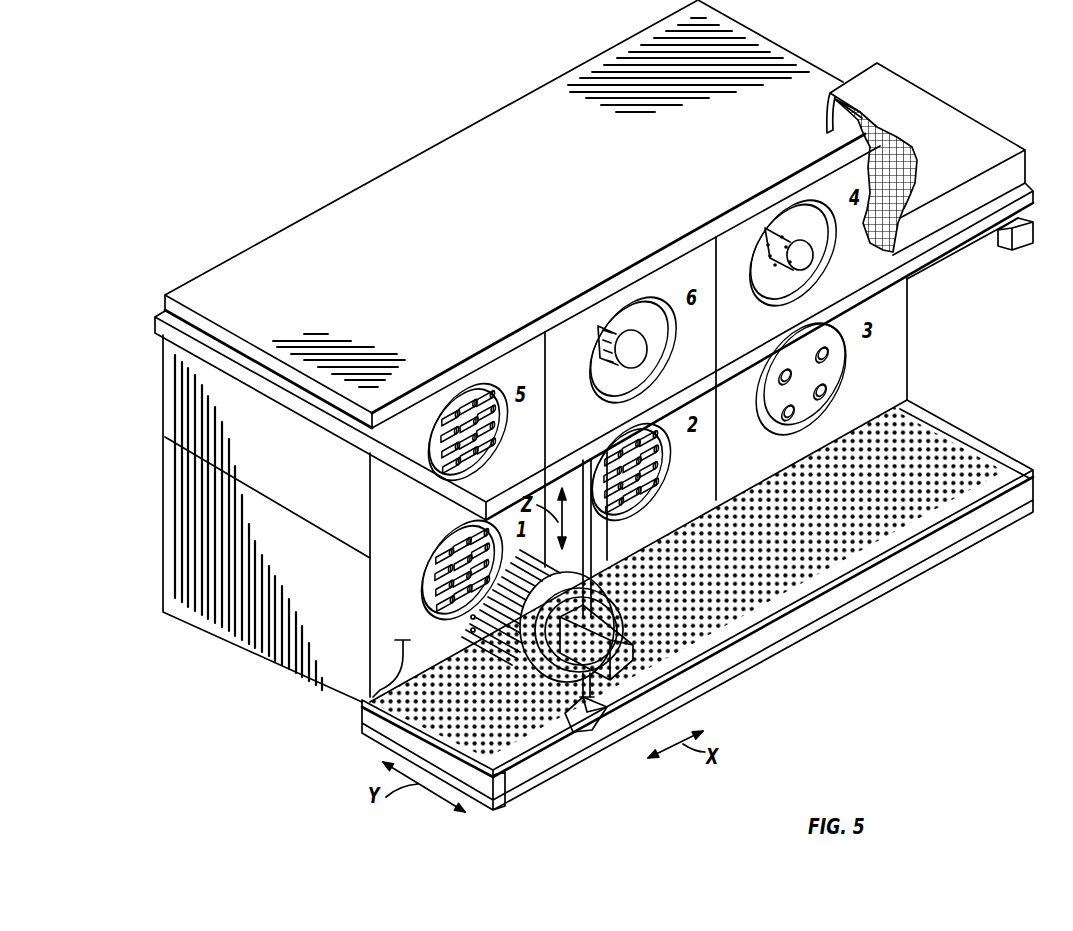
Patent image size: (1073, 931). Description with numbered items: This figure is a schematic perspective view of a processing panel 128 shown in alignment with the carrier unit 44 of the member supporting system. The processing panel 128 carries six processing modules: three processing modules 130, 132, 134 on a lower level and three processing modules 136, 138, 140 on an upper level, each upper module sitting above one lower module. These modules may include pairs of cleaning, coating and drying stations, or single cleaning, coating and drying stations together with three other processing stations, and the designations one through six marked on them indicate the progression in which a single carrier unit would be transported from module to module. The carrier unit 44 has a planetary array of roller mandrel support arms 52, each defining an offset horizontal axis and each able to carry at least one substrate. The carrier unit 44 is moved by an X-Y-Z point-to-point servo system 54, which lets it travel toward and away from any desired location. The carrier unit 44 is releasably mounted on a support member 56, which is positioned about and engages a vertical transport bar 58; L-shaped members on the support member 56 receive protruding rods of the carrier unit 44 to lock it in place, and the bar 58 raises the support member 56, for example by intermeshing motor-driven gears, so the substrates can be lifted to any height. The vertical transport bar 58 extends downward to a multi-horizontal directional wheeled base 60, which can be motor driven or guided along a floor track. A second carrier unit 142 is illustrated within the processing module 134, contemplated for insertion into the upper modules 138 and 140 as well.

The processing panel 128 is at (327, 171).
The processing module 130 is at (362, 702).
The processing module 132 is at (683, 486).
The processing module 134 is at (889, 355).
The processing module 136 is at (501, 373).
The processing module 138 is at (646, 291).
The processing module 140 is at (749, 249).
The second carrier unit 142 is at (832, 374).
The carrier unit 44 is at (582, 730).
The roller mandrel support arm 52 is at (380, 727).
The X-Y-Z point-to-point servo system 54 is at (656, 667).
The support member 56 is at (627, 653).
The vertical transport bar 58 is at (588, 557).
The multi-horizontal directional wheeled base 60 is at (597, 707).